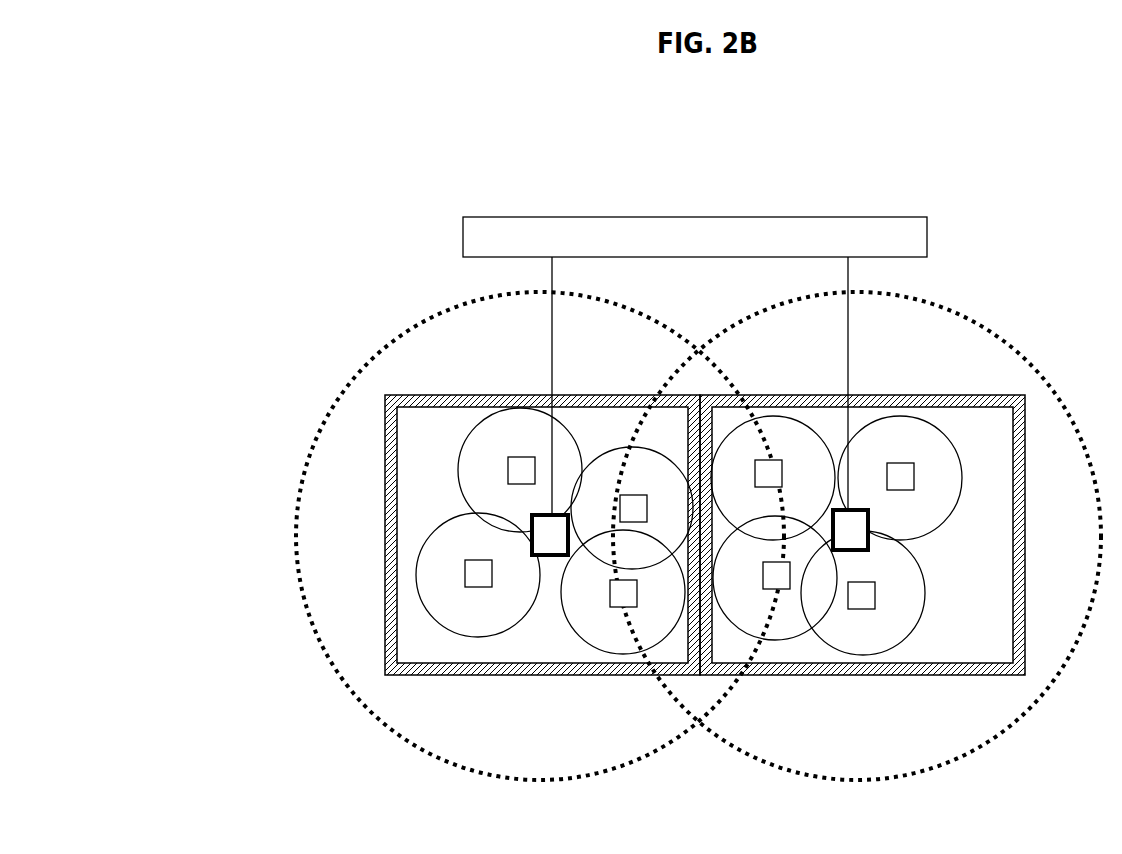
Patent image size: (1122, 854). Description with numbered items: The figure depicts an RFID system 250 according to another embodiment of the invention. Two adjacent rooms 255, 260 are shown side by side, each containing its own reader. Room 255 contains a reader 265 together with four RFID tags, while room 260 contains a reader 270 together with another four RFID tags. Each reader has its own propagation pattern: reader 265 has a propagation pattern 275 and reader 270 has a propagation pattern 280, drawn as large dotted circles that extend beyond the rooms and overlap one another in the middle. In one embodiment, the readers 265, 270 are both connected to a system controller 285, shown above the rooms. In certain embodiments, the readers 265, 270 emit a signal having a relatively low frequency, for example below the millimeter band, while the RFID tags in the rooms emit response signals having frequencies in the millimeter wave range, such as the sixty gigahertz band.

The RFID system 250 is at (301, 130).
The room 255 is at (385, 497).
The room 260 is at (1026, 562).
The reader 265 is at (550, 535).
The reader 270 is at (850, 530).
The propagation pattern 275 is at (360, 370).
The propagation pattern 280 is at (1016, 356).
The system controller 285 is at (633, 217).